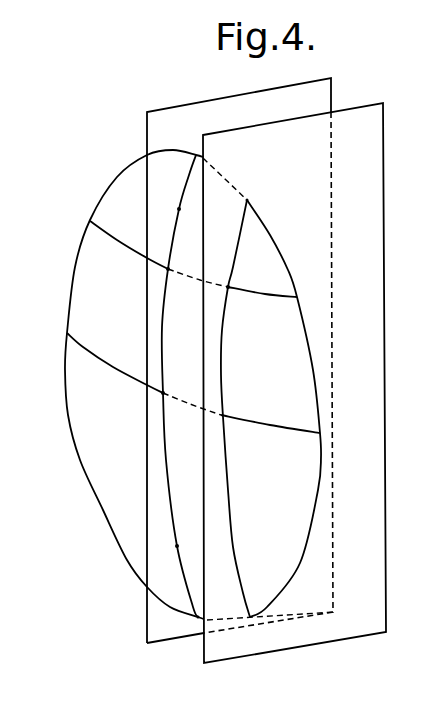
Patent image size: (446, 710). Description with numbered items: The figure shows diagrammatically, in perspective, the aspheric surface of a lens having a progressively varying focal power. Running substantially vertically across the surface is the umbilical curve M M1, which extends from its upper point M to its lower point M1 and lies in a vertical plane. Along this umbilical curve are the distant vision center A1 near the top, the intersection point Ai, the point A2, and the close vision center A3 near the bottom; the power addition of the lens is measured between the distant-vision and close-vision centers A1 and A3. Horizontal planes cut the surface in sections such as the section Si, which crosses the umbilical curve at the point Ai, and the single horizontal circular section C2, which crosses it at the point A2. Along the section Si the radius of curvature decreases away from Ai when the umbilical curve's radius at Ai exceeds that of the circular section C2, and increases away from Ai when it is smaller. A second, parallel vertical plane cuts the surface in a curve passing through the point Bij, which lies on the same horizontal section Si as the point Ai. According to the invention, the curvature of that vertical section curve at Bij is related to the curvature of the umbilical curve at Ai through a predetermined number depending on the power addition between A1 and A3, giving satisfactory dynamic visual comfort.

The umbilical curve end point M is at (187, 175).
The umbilical curve end point M1 is at (190, 597).
The distant vision center A1 is at (178, 210).
The point of intersection Ai is at (176, 262).
The point on umbilical curve A2 is at (164, 393).
The close vision center A3 is at (178, 545).
The horizontal section Si is at (90, 222).
The single horizontal circular section C2 is at (80, 348).
The point of the aspheric surface Bij is at (241, 280).